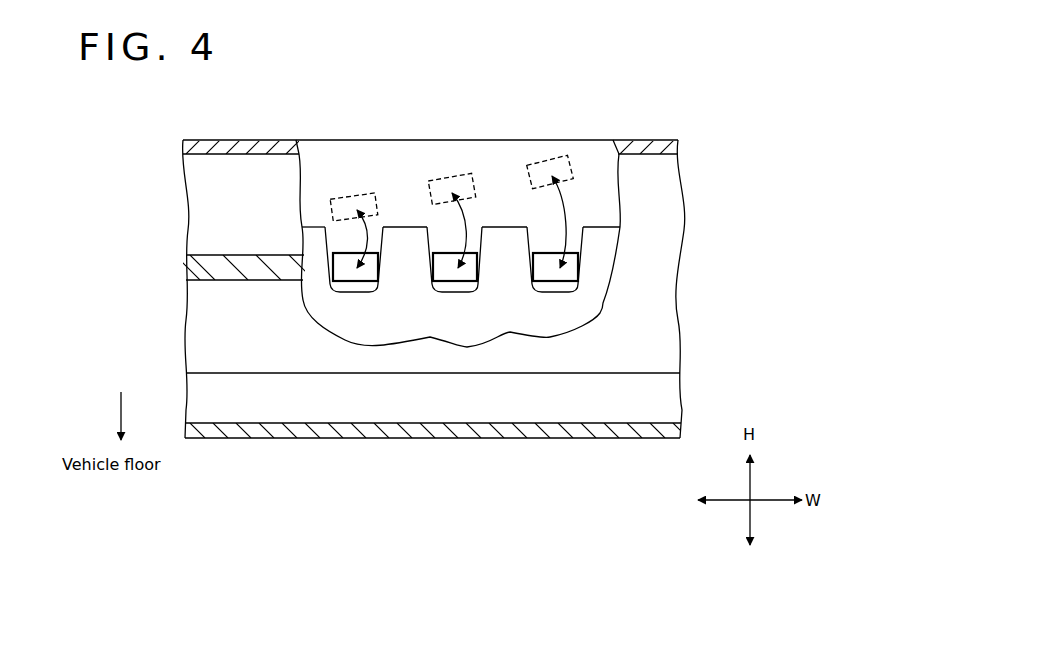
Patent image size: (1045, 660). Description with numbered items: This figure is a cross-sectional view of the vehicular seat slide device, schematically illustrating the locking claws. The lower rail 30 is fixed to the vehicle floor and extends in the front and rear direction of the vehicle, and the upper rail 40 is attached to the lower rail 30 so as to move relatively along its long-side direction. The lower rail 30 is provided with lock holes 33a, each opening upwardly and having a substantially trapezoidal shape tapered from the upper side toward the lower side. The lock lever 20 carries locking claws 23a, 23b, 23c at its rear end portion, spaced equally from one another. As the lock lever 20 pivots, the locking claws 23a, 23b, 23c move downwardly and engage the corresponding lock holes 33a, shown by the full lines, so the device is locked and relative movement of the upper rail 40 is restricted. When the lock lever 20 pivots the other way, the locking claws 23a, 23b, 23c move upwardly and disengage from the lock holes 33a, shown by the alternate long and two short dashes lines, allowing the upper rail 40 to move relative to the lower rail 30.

The upper rail 40 is at (258, 140).
The lock lever 20 is at (226, 281).
The lower rail 30 is at (407, 227).
The lock hole 33a is at (325, 229).
The locking claw 23a is at (335, 196).
The locking claw 23b is at (472, 175).
The locking claw 23c is at (563, 157).